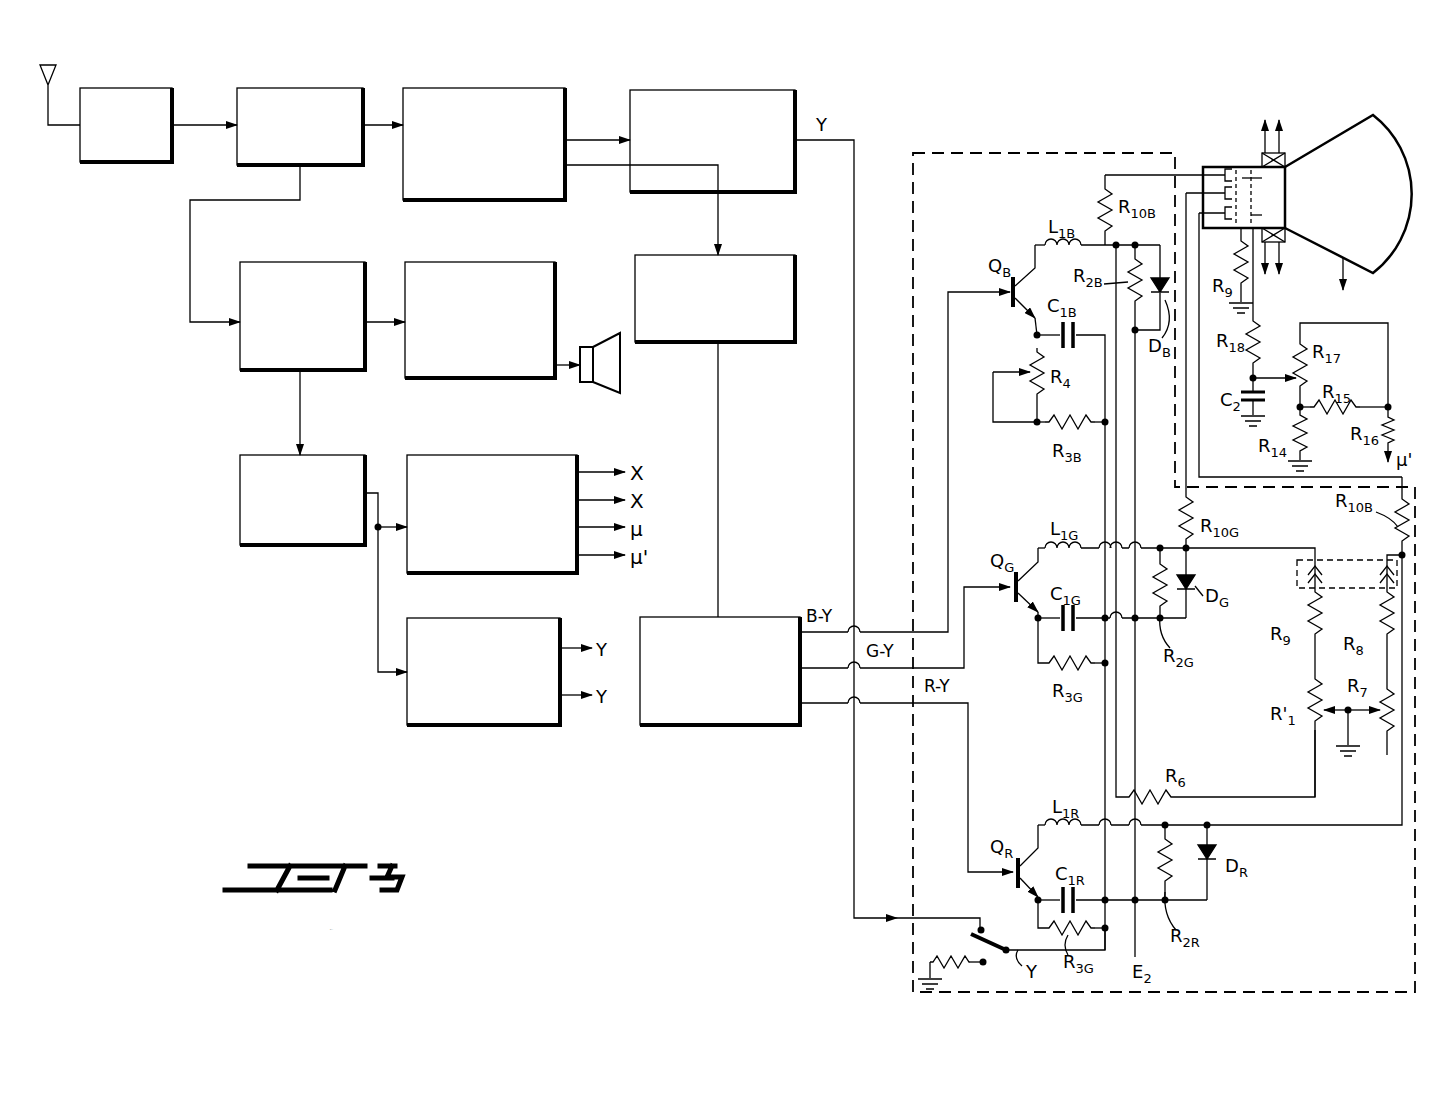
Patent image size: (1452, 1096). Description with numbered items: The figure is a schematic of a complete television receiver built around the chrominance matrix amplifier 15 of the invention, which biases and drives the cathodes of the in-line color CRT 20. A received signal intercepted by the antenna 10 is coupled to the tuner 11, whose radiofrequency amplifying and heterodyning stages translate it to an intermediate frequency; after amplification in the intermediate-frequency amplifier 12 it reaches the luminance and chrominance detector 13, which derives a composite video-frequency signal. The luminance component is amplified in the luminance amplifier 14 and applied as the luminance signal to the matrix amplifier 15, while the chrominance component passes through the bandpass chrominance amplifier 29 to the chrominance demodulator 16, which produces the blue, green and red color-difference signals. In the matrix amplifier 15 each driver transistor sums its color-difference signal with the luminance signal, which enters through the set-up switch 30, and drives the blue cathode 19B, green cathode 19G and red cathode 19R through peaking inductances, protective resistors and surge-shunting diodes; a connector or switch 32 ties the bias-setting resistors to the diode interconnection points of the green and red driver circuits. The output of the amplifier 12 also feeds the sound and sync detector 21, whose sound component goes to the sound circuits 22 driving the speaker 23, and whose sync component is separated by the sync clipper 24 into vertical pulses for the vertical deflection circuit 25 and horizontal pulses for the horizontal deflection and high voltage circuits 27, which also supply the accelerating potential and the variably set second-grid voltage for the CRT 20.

The antenna 10 is at (52, 70).
The tuner 11 is at (128, 88).
The intermediate-frequency amplifier 12 is at (288, 88).
The luminance and chrominance detector 13 is at (462, 88).
The luminance amplifier 14 is at (706, 90).
The chrominance matrix amplifier 15 is at (1080, 153).
The chrominance demodulator 16 is at (718, 725).
The blue cathode 19B is at (1222, 173).
The green cathode 19G is at (1240, 194).
The red cathode 19R is at (1225, 222).
The in-line color CRT 20 is at (1326, 142).
The sound and sync detector 21 is at (352, 262).
The sound circuits 22 is at (510, 262).
The speaker 23 is at (621, 366).
The sync clipper 24 is at (336, 455).
The vertical deflection circuit 25 is at (500, 725).
The horizontal deflection and high voltage circuits 27 is at (550, 455).
The chrominance amplifier 29 is at (760, 255).
The set-up switch 30 is at (990, 940).
The connector or switch 32 is at (1345, 560).